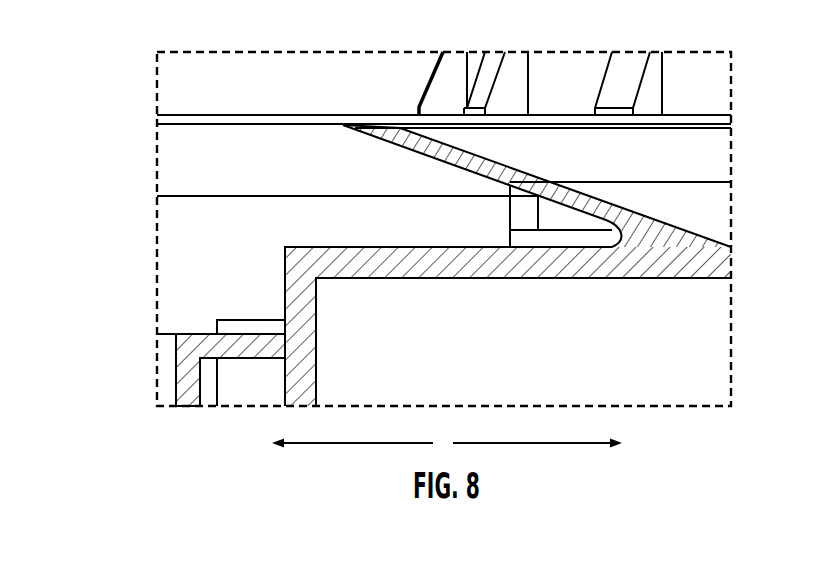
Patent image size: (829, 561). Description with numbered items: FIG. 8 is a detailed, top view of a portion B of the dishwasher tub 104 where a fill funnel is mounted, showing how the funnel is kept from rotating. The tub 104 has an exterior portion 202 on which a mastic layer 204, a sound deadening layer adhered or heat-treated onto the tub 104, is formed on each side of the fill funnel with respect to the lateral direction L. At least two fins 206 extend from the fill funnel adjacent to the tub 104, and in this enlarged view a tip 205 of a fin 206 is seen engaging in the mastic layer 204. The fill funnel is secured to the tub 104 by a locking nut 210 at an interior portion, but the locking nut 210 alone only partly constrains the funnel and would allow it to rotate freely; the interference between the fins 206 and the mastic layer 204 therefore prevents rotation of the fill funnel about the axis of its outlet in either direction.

The tub 104 is at (295, 95).
The exterior portion 202 is at (222, 120).
The mastic layer 204 is at (305, 172).
The tip 205 is at (360, 128).
The fins 206 is at (490, 165).
The locking nut 210 is at (584, 92).
The portion B is at (593, 52).
The lateral direction L is at (447, 444).